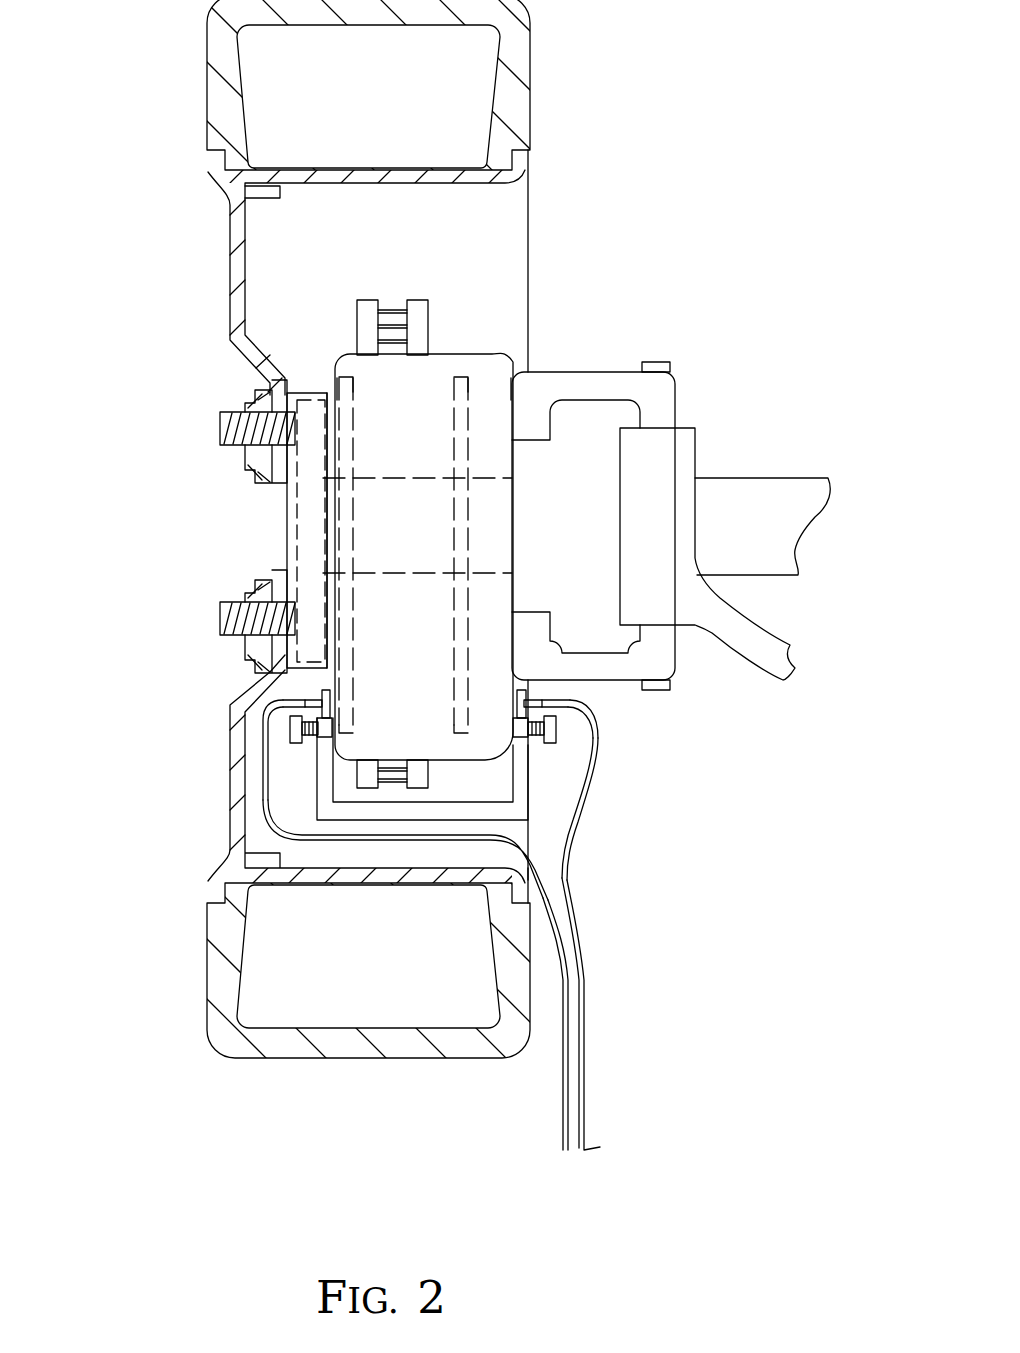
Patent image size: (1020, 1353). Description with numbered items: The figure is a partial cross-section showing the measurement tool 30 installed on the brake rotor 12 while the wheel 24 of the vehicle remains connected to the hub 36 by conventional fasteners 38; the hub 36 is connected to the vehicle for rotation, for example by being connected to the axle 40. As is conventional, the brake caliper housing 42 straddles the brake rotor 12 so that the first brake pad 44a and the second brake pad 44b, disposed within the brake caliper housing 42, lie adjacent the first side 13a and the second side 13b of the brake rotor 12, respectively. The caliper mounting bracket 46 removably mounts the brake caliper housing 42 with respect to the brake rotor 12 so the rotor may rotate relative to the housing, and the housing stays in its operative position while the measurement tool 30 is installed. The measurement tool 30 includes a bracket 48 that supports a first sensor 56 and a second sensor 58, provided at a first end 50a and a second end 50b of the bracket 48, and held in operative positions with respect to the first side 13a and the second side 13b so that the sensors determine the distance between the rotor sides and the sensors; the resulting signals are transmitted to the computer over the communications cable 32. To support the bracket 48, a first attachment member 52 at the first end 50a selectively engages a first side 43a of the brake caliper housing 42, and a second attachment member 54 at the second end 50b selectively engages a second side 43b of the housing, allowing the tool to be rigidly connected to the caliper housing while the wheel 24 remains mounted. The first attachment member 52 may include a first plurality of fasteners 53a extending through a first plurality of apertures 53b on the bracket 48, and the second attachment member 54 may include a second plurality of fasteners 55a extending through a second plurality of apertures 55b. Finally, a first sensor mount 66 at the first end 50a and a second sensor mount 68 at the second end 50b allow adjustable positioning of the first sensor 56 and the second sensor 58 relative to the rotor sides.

The brake rotor 12 is at (418, 300).
The first side 13a is at (337, 320).
The second side 13b is at (437, 320).
The wheel 24 is at (230, 238).
The measurement tool 30 is at (545, 843).
The communications cable 32 is at (583, 1112).
The hub 36 is at (297, 523).
The fasteners 38 is at (220, 418).
The axle 40 is at (765, 478).
The brake caliper housing 42 is at (498, 352).
The first side of brake caliper housing 43a is at (337, 377).
The second side of brake caliper housing 43b is at (512, 427).
The first brake pad 44a is at (337, 543).
The second brake pad 44b is at (512, 400).
The caliper mounting bracket 46 is at (733, 326).
The bracket 48 is at (563, 842).
The first end 50a is at (330, 813).
The second end 50b is at (557, 838).
The first attachment member 52 is at (253, 727).
The first plurality of fasteners 53a is at (288, 728).
The first plurality of apertures 53b is at (318, 735).
The second attachment member 54 is at (588, 741).
The second plurality of fasteners 55a is at (588, 760).
The second plurality of apertures 55b is at (533, 805).
The first sensor 56 is at (322, 702).
The second sensor 58 is at (600, 745).
The first sensor mount 66 is at (305, 702).
The second sensor mount 68 is at (530, 690).